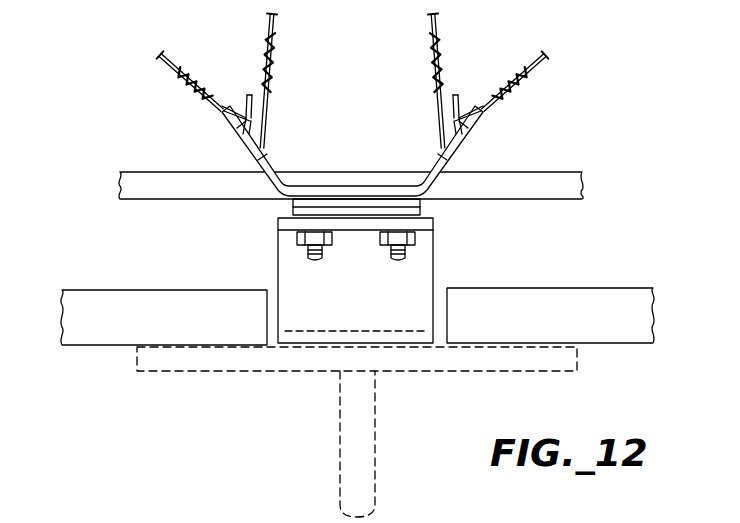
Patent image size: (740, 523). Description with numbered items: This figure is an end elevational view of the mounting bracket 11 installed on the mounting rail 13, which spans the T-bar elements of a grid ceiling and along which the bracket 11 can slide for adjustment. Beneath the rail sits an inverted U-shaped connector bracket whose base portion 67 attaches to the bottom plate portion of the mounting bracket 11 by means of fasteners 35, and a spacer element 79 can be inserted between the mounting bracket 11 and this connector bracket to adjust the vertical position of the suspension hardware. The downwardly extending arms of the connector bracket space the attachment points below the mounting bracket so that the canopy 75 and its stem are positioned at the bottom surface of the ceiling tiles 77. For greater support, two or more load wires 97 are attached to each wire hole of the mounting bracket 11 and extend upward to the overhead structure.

The mounting bracket 11 is at (444, 162).
The mounting rail 13 is at (514, 171).
The bolts 35 is at (317, 262).
The base portion 67 is at (452, 241).
The canopy 75 is at (272, 374).
The ceiling tiles 77 is at (375, 424).
The spacer element 79 is at (226, 218).
The load wires 97 is at (266, 50).